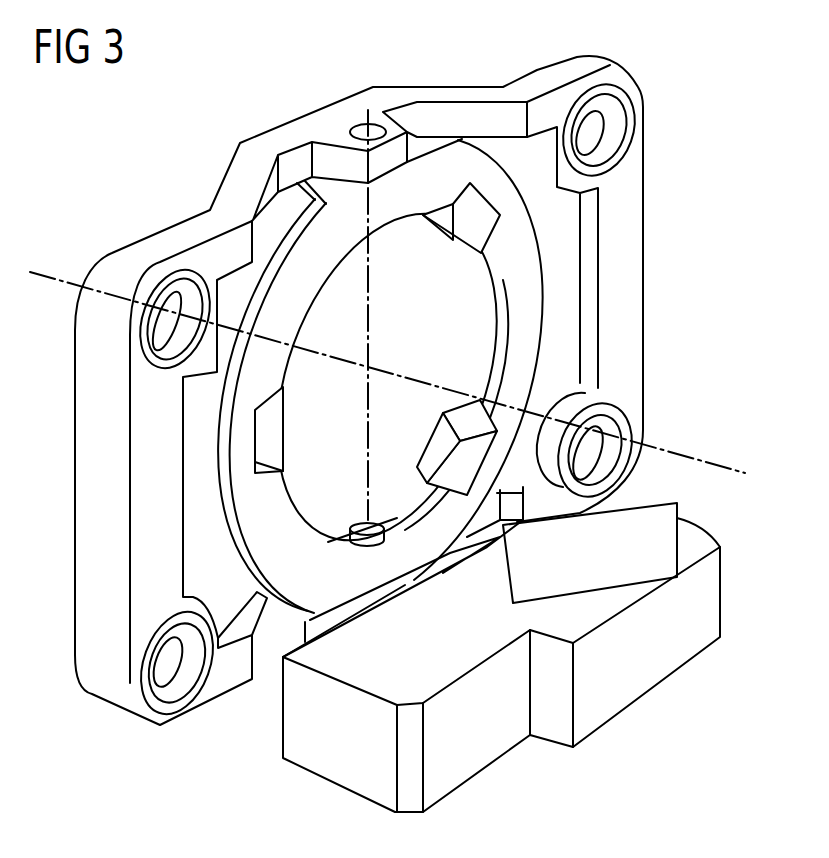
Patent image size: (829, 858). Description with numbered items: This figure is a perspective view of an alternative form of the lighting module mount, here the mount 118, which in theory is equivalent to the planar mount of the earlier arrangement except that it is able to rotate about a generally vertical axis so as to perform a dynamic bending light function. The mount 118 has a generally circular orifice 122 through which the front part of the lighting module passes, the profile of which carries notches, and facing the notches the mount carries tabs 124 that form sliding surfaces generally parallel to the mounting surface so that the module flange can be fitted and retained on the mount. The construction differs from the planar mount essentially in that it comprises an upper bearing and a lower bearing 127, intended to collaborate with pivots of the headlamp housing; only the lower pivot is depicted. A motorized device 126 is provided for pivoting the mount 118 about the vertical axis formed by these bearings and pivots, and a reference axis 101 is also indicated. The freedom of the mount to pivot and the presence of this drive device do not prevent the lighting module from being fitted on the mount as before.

The optical axis 101 is at (693, 455).
The mount 118 is at (240, 183).
The orifice 122 is at (398, 490).
The tab 124 is at (260, 430).
The motorized device 126 is at (643, 670).
The lower bearing 127 is at (360, 127).